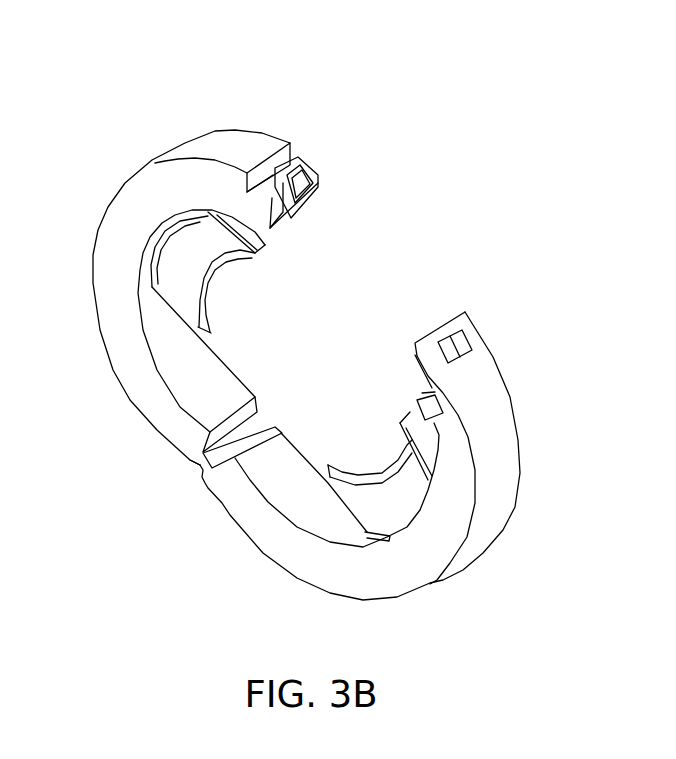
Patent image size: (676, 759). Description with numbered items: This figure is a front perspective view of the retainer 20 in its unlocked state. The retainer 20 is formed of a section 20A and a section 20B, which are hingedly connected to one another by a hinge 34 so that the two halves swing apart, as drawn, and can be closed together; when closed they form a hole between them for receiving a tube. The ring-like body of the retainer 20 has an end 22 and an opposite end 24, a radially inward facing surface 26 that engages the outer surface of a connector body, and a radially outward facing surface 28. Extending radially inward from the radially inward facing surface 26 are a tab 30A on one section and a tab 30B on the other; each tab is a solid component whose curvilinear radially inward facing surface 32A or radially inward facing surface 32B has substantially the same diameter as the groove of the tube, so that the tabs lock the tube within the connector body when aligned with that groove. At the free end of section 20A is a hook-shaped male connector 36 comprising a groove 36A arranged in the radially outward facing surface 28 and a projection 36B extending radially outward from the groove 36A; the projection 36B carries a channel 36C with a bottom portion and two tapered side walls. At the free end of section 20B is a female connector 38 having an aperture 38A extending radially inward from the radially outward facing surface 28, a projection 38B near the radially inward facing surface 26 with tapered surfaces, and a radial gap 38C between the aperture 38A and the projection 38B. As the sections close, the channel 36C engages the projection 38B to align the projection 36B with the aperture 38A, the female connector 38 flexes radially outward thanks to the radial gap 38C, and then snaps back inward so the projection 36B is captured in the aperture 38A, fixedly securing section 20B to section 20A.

The retainer 20 is at (542, 152).
The section 20A is at (96, 185).
The section 20B is at (510, 525).
The end 22 is at (517, 413).
The end 24 is at (113, 247).
The radially inward facing surface 26 is at (190, 380).
The radially outward facing surface 28 is at (200, 148).
The tab 30A is at (173, 285).
The tab 30B is at (393, 513).
The radially inward facing surface 32A is at (208, 285).
The radially inward facing surface 32B is at (357, 477).
The hinge 34 is at (179, 481).
The male connector 36 is at (358, 152).
The groove 36A is at (272, 228).
The projection 36B is at (293, 163).
The channel 36C is at (313, 200).
The female connector 38 is at (509, 328).
The aperture 38A is at (448, 343).
The projection 38B is at (430, 388).
The radial gap 38C is at (447, 437).